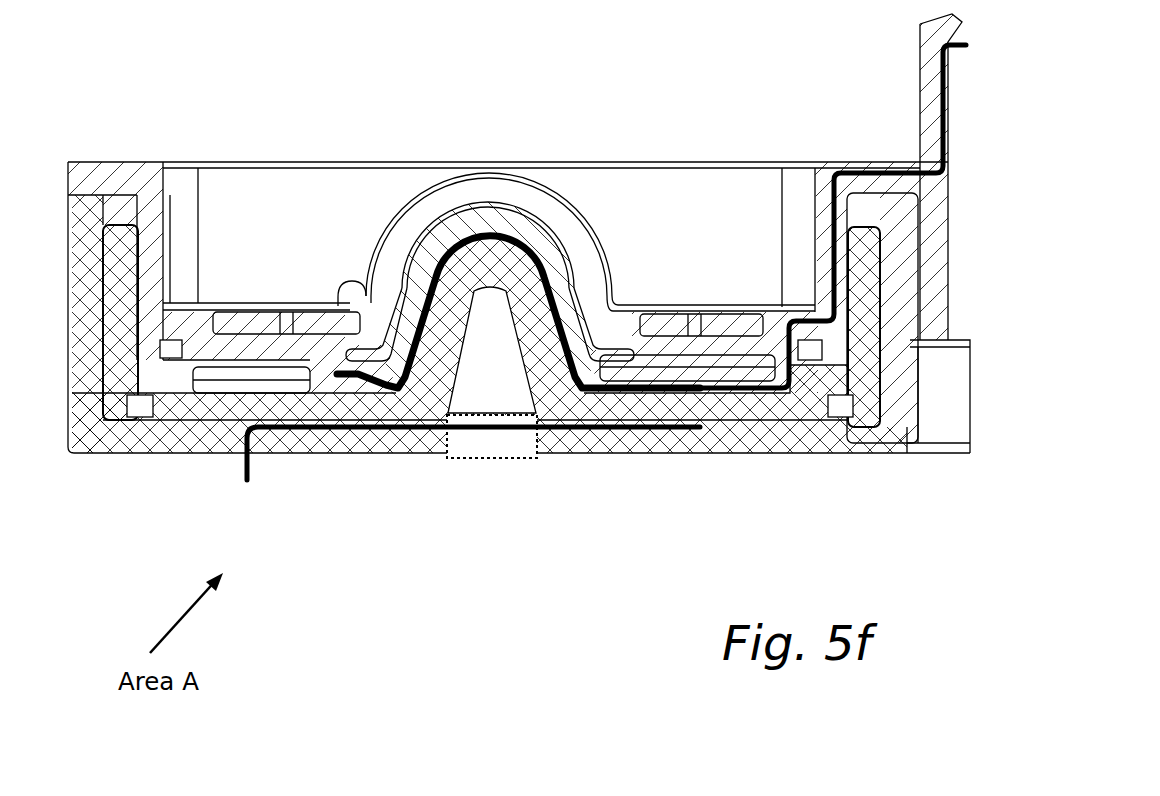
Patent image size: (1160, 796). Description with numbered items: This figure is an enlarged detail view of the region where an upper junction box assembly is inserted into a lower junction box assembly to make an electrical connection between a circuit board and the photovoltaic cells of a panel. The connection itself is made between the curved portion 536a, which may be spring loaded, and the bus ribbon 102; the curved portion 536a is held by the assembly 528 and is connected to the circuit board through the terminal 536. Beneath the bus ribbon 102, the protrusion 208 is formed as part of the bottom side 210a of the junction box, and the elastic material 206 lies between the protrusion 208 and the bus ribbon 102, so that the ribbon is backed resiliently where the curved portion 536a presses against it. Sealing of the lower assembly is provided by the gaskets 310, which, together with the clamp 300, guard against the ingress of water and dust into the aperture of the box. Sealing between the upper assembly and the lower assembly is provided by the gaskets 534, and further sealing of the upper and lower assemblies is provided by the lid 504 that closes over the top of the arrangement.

The bus ribbon 102 is at (278, 412).
The elastic material 206 is at (567, 308).
The protrusion 208 is at (447, 343).
The bottom side 210a is at (713, 452).
The clamp 300 is at (272, 440).
The gasket 310 is at (143, 418).
The lid 504 is at (378, 165).
The assembly 528 is at (567, 292).
The gasket 534 is at (178, 354).
The terminal 536 is at (897, 165).
The curved portion 536a is at (540, 233).